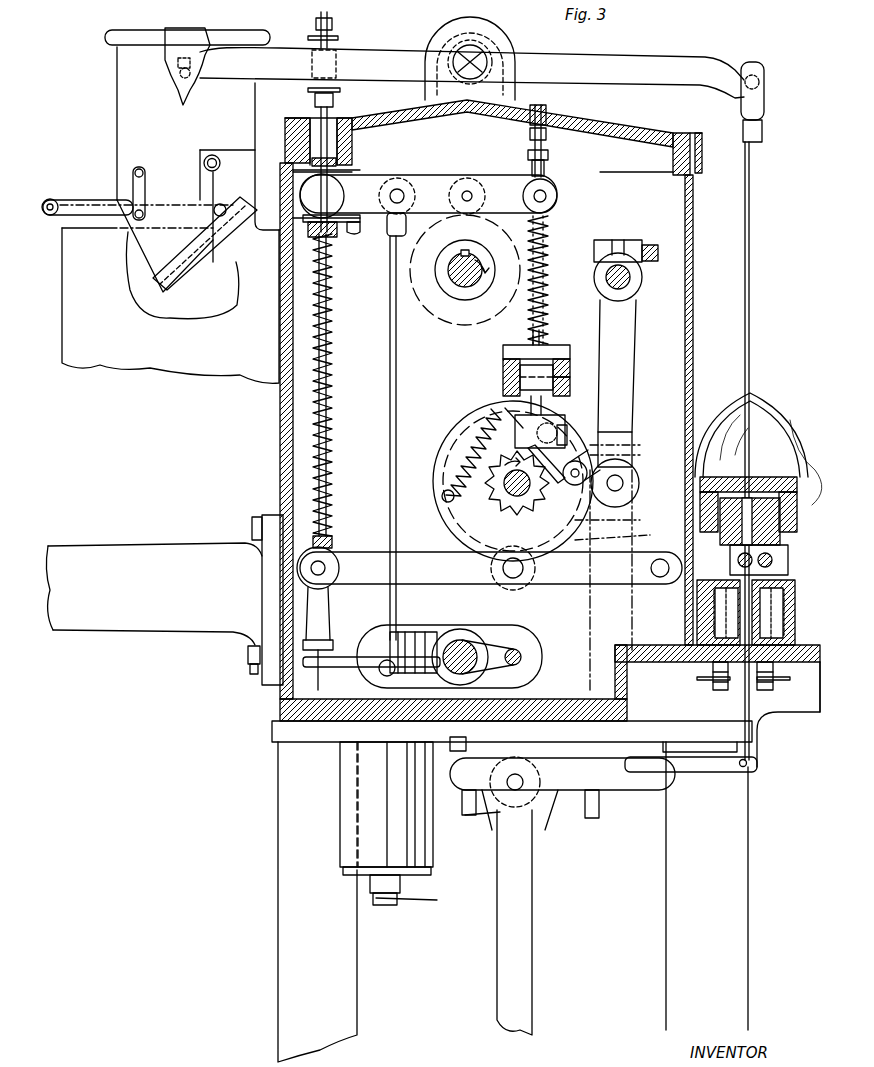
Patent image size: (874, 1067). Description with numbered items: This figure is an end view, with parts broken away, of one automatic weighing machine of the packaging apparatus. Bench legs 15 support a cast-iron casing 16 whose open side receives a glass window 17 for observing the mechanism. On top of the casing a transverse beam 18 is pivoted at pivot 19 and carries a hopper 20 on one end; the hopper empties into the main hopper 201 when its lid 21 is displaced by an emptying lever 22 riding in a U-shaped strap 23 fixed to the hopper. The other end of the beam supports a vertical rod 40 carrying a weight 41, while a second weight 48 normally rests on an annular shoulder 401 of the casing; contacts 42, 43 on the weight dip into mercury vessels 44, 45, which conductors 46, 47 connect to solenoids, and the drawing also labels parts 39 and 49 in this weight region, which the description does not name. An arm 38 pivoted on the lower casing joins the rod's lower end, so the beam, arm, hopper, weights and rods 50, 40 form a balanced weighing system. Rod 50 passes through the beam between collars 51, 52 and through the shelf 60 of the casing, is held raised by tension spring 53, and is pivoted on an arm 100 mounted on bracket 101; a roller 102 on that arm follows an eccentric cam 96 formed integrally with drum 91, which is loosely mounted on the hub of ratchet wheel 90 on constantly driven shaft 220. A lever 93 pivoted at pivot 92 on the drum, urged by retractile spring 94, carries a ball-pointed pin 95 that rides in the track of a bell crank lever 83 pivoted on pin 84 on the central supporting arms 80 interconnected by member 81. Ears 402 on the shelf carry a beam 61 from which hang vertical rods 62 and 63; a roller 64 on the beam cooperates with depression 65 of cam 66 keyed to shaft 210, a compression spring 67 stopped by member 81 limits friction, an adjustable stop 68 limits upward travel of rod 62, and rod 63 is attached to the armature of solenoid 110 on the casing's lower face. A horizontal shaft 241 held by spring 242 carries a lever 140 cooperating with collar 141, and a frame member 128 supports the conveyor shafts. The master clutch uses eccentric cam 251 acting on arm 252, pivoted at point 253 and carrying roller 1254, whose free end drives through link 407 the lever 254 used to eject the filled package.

The bench legs 15 is at (278, 930).
The casing 16 is at (625, 122).
The glass plate or window 17 is at (693, 320).
The transverse beam 18 is at (420, 55).
The pivot 19 is at (488, 60).
The hopper 20 is at (117, 93).
The lid 21 is at (165, 300).
The emptying lever 22 is at (85, 200).
The U-shaped strap 23 is at (145, 188).
The arm 38 is at (730, 778).
The base block 39 is at (816, 655).
The vertical rod 40 is at (752, 233).
The weight 41 is at (780, 537).
The conducting contact 42 is at (683, 575).
The conducting contact 43 is at (788, 575).
The mercury vessel 44 is at (713, 665).
The mercury vessel 45 is at (795, 612).
The conductor 46 is at (697, 679).
The conductor 47 is at (775, 690).
The second weight 48 is at (782, 482).
The guide 49 is at (805, 428).
The vertical rod 50 is at (334, 336).
The collar 51 is at (372, 22).
The collar 52 is at (340, 90).
The tension spring 53 is at (334, 378).
The shelf 60 is at (338, 240).
The beam 61 is at (462, 158).
The vertical rod 62 is at (549, 240).
The second vertical rod 63 is at (396, 382).
The roller 64 is at (467, 177).
The depression 65 is at (440, 235).
The cam 66 is at (445, 318).
The compression spring 67 is at (548, 260).
The adjustable stop 68 is at (548, 160).
The supporting arms 80 is at (503, 374).
The member 81 is at (548, 348).
The bell crank lever 83 is at (570, 366).
The pin 84 is at (570, 388).
The ratchet wheel 90 is at (525, 510).
The drum 91 is at (437, 458).
The pivot 92 is at (583, 520).
The lever 93 is at (515, 425).
The retractile spring 94 is at (460, 445).
The pin 95 is at (583, 430).
The eccentric cam 96 is at (590, 575).
The arm 100 is at (437, 585).
The bracket 101 is at (632, 608).
The roller 102 is at (522, 586).
The solenoid 110 is at (340, 855).
The frame member 128 is at (120, 640).
The lever 140 is at (372, 608).
The collar 141 is at (345, 630).
The main hopper 201 is at (105, 362).
The horizontal shaft 210 is at (465, 298).
The shaft 220 is at (538, 500).
The horizontal shaft 241 is at (470, 632).
The spring 242 is at (542, 680).
The eccentric cam 251 is at (618, 544).
The arm 252 is at (676, 525).
The pivot point 253 is at (606, 278).
The lever 254 is at (532, 912).
The annular shoulder 401 is at (770, 402).
The ears 402 is at (280, 152).
The link 407 is at (590, 818).
The roller 1254 is at (672, 462).